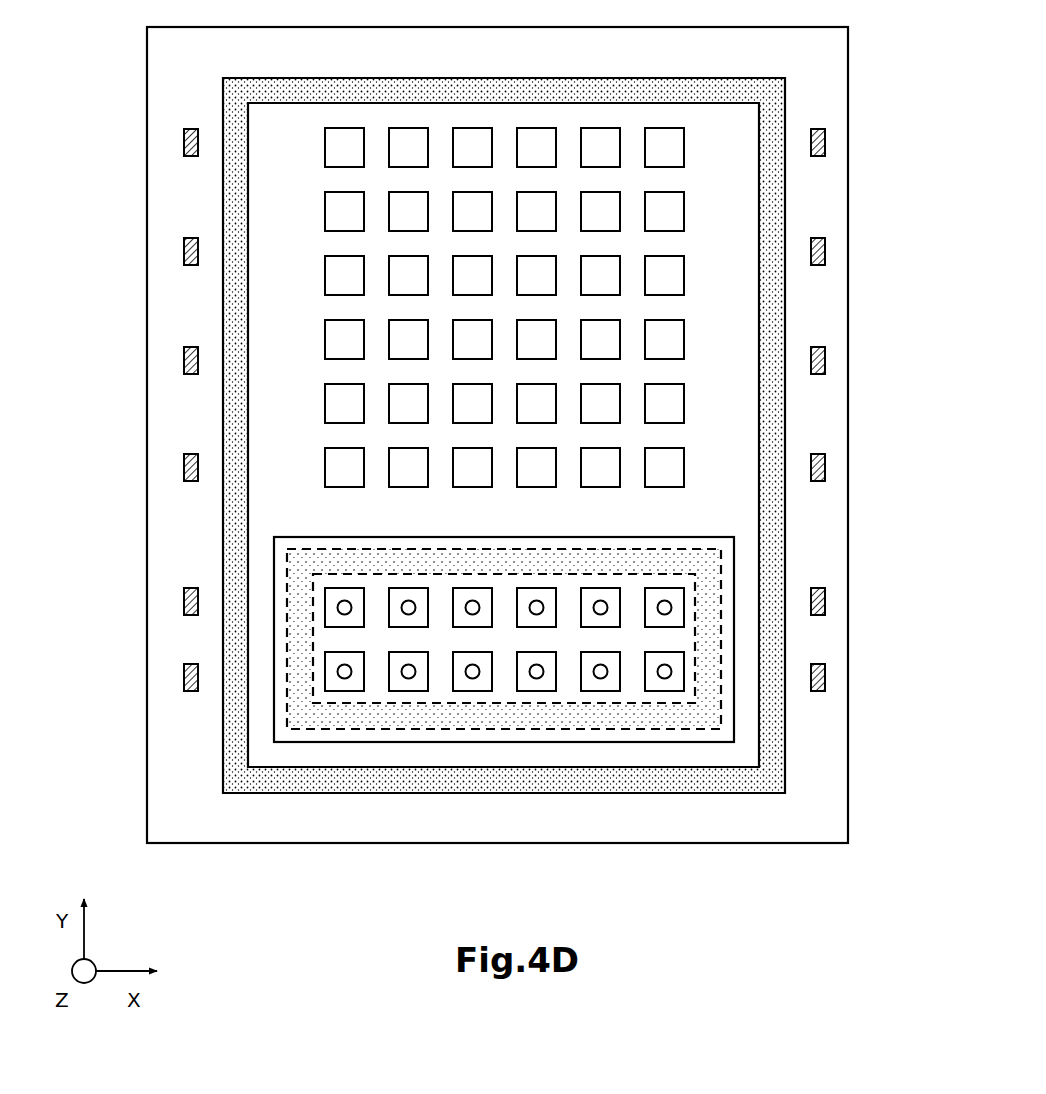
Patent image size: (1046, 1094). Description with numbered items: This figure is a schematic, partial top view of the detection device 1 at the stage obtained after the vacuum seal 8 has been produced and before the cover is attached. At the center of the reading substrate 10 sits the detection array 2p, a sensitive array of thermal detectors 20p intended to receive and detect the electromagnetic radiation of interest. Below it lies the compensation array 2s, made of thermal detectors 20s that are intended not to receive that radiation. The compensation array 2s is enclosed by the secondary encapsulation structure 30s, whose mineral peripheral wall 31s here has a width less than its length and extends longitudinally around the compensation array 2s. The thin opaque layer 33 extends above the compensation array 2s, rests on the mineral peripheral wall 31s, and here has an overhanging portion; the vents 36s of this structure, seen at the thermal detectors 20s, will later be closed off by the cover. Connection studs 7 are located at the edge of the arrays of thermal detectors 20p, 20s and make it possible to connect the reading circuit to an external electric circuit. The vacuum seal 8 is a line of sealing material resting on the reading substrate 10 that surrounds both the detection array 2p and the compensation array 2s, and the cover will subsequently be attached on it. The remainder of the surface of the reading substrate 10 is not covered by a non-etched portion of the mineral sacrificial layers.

The detection device 1 is at (95, 79).
The connection studs 7 is at (180, 143).
The vacuum seal 8 is at (220, 437).
The reading substrate 10 is at (851, 300).
The detection array 2p is at (690, 287).
The thermal detectors 20p is at (688, 403).
The mineral peripheral wall 31s is at (296, 568).
The thin opaque layer 33 is at (271, 637).
The secondary encapsulation structure 30s is at (262, 713).
The compensation array 2s is at (690, 593).
The thermal detectors 20s is at (688, 617).
The vents 36s is at (408, 684).